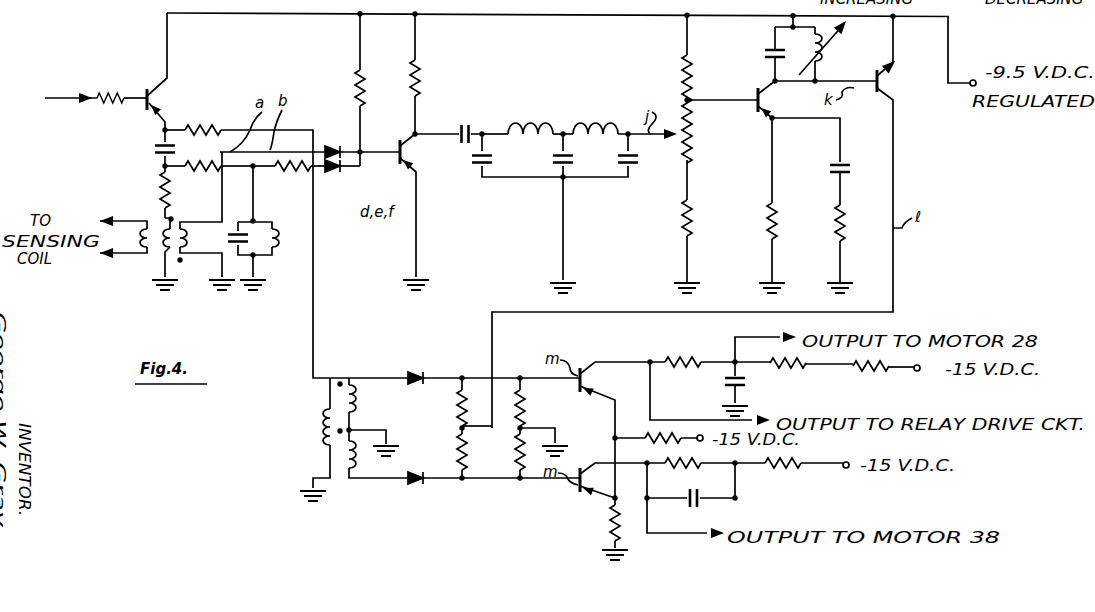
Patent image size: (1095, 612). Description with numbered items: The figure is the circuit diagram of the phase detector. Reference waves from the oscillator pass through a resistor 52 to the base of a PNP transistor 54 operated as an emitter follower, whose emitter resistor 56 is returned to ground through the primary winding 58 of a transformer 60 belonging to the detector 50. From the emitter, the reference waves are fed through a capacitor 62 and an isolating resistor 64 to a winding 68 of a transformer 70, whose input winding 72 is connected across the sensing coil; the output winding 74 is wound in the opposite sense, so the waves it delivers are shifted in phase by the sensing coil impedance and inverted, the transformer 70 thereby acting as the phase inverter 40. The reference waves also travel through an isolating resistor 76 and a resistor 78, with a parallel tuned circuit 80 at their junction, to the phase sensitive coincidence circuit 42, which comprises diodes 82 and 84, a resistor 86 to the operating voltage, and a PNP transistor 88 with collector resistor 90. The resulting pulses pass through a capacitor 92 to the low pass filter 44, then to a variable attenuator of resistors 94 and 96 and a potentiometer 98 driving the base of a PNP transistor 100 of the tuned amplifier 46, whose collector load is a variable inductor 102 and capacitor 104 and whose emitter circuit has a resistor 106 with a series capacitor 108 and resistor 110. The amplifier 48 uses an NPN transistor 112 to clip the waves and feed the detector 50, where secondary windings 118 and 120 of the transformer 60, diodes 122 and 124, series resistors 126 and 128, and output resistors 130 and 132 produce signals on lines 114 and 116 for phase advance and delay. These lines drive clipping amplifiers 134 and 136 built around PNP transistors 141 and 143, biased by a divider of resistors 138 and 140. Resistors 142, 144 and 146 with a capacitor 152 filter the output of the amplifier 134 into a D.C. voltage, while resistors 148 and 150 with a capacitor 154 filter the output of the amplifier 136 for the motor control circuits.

The phase inverter 40 is at (162, 254).
The phase sensitive coincidence circuit 42 is at (397, 203).
The filter 44 is at (574, 195).
The tuned amplifier 46 is at (731, 100).
The A.C. amplifier 48 is at (708, 222).
The detector 50 is at (485, 437).
The resistor 52 is at (108, 99).
The PNP transistor 54 is at (170, 94).
The emitter resistor 56 is at (202, 126).
The primary winding 58 is at (300, 440).
The transformer 60 is at (369, 413).
The capacitor 62 is at (146, 156).
The isolating resistor 64 is at (146, 196).
The winding 68 is at (178, 222).
The transformer 70 is at (144, 226).
The input winding 72 is at (165, 221).
The output winding 74 is at (199, 239).
The isolating resistor 76 is at (192, 178).
The resistor 78 is at (303, 171).
The parallel tuned circuit 80 is at (253, 228).
The diode 82 is at (336, 176).
The diode 84 is at (342, 148).
The resistor 86 is at (350, 82).
The PNP transistor 88 is at (414, 152).
The resistor 90 is at (432, 82).
The capacitor 92 is at (484, 126).
The resistor 94 is at (680, 68).
The resistor 96 is at (678, 240).
The potentiometer 98 is at (680, 160).
The PNP transistor 100 is at (766, 108).
The variable inductor 102 is at (806, 46).
The capacitor 104 is at (770, 50).
The resistor 106 is at (818, 192).
The capacitor 108 is at (850, 148).
The resistor 110 is at (842, 200).
The NPN transistor 112 is at (872, 94).
The line 114 is at (522, 378).
The line 116 is at (554, 480).
The secondary winding 118 is at (354, 398).
The secondary winding 120 is at (368, 464).
The diode 122 is at (472, 354).
The diode 124 is at (416, 484).
The resistor 126 is at (456, 408).
The resistor 128 is at (458, 438).
The resistor 130 is at (524, 408).
The resistor 132 is at (504, 470).
The clipping amplifier 134 is at (612, 416).
The clipping amplifier 136 is at (608, 497).
The resistor 138 is at (614, 438).
The resistor 140 is at (632, 528).
The PNP transistor 141 is at (574, 370).
The resistor 142 is at (668, 332).
The PNP transistor 143 is at (590, 494).
The resistor 144 is at (792, 366).
The resistor 146 is at (872, 370).
The resistor 148 is at (690, 464).
The resistor 150 is at (792, 466).
The capacitor 152 is at (726, 388).
The capacitor 154 is at (708, 502).